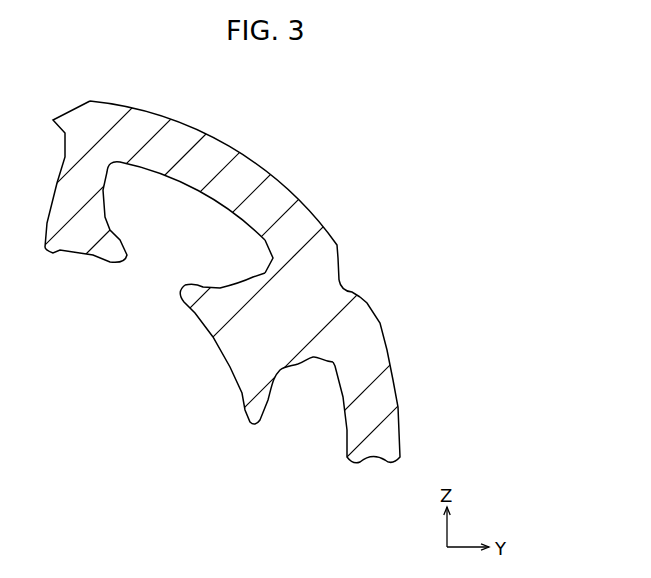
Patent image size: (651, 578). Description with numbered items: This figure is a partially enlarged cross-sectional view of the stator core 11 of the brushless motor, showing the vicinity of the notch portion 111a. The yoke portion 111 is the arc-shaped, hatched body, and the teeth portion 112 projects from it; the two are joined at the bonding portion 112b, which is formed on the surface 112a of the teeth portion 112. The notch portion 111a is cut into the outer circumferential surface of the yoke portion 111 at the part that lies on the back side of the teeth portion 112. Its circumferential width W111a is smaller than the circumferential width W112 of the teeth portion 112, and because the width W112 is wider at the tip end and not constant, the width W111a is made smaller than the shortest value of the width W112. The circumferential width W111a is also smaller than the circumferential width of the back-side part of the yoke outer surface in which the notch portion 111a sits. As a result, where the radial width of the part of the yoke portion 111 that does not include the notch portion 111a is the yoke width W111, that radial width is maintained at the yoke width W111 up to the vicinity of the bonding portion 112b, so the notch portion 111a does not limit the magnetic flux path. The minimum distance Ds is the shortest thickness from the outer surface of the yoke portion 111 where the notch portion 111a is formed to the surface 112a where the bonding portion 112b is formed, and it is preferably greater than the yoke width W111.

The stator core 11 is at (142, 108).
The yoke portion 111 is at (373, 403).
The teeth portion 112 is at (262, 352).
The notch portion 111a is at (352, 291).
The surface of teeth portion 112a is at (233, 283).
The bonding portion 112b is at (273, 262).
The yoke width W111 is at (187, 180).
The circumferential width of notch portion W111a is at (370, 310).
The circumferential width of teeth portion W112 is at (337, 260).
The minimum distance Ds is at (273, 258).